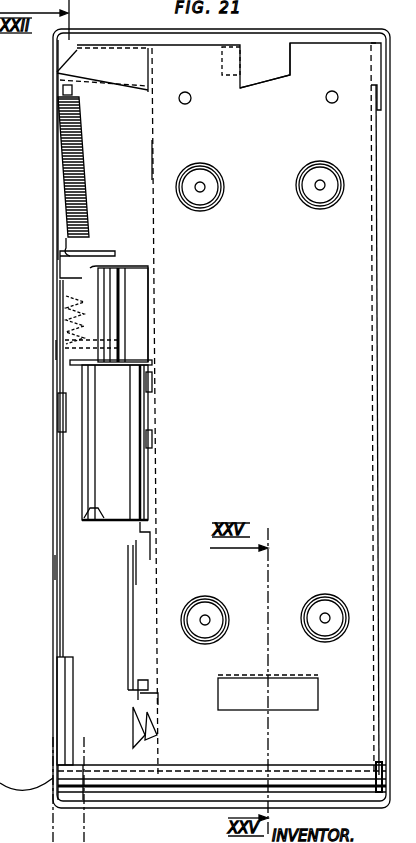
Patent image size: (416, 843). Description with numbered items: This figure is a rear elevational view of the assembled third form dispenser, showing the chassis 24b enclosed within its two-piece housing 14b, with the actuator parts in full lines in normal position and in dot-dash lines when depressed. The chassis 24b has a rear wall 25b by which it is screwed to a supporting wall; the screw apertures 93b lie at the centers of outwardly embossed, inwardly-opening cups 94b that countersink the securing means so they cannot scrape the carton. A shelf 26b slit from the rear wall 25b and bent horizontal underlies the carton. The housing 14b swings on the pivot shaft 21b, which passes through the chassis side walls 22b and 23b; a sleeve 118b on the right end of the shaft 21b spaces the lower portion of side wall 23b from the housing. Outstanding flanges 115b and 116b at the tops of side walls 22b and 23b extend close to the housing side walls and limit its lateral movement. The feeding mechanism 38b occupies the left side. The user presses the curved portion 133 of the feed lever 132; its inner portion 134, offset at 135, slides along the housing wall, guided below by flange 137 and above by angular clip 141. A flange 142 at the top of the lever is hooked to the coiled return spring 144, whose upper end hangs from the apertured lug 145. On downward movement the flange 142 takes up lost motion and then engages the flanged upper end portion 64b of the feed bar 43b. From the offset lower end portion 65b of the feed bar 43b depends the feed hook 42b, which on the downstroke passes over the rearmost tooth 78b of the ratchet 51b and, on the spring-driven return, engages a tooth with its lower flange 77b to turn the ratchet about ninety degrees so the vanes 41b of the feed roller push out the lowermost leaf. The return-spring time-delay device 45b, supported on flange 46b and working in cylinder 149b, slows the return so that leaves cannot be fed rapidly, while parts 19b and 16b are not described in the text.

The housing 14b is at (339, 3).
The rear wall 25b is at (280, 382).
The side wall 22b is at (373, 574).
The outstanding flange 116b is at (122, 70).
The outstanding flange 115b is at (372, 62).
The apertured lug 145 is at (78, 88).
The coiled return spring 144 is at (84, 152).
The chassis 24b is at (146, 160).
The flange 142 is at (103, 252).
The feed bar 43b is at (150, 302).
The flanged upper end portion 64b is at (60, 283).
The feeding mechanism 38b is at (158, 341).
The cylinder body 149b is at (97, 470).
The flange 46b is at (84, 517).
The angular clip 141 is at (56, 411).
The inner portion 134 is at (64, 588).
The lower end portion 65b is at (142, 537).
The feed hook 42b is at (128, 628).
The side wall 23b is at (162, 582).
The lower flange 77b is at (150, 700).
The ratchet 51b is at (135, 714).
The tooth 78b is at (150, 735).
The inward offset 135 is at (55, 660).
The flange 137 is at (87, 708).
The feed lever 132 is at (48, 568).
The sleeve 118b is at (50, 562).
The curved portion 133 is at (33, 785).
The pivot shaft 21b is at (196, 795).
The aperture 93b is at (318, 182).
The inwardly-opening cup 94b is at (310, 200).
The shelf 26b is at (292, 708).
The return-spring time-delay device 45b is at (13, 154).
The part 19b is at (10, 216).
The part 16b is at (10, 274).
The vane 41b is at (45, 355).